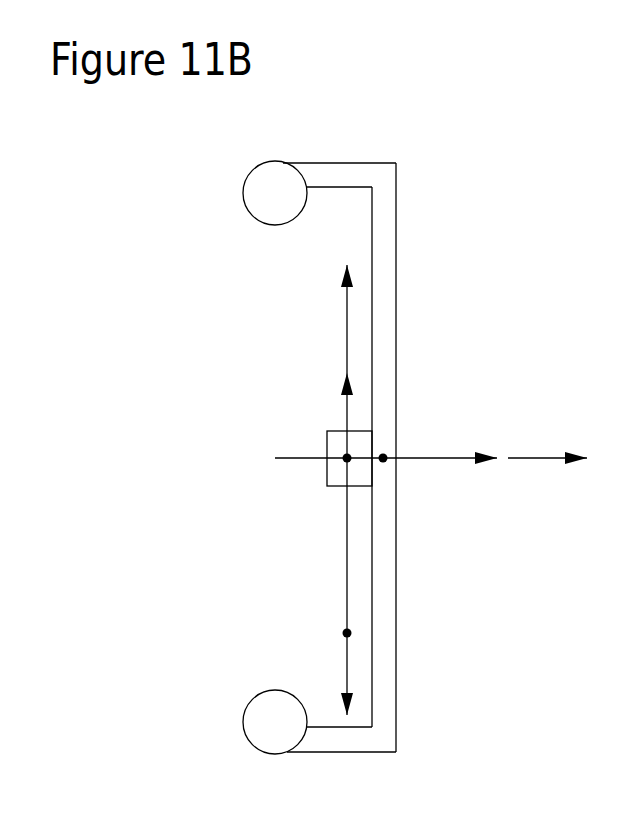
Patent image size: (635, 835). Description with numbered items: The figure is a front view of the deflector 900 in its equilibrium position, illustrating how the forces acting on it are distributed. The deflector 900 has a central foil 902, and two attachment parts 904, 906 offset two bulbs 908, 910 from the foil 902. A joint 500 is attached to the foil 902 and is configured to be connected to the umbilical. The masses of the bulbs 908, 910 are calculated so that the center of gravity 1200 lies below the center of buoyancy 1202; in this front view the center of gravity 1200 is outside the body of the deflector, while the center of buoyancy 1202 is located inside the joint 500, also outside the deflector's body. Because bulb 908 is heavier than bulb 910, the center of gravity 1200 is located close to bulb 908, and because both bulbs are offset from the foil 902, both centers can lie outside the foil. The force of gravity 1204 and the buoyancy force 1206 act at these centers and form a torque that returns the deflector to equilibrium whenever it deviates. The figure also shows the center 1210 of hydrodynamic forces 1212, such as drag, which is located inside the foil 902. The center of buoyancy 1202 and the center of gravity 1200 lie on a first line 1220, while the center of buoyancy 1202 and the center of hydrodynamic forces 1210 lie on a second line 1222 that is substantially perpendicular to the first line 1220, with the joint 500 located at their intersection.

The deflector 900 is at (357, 113).
The foil 902 is at (384, 580).
The attachment part 904 is at (352, 742).
The attachment part 906 is at (335, 163).
The bulb 908 is at (255, 723).
The bulb 910 is at (262, 162).
The joint 500 is at (327, 431).
The center of gravity 1200 is at (347, 633).
The center of buoyancy 1202 is at (345, 460).
The force of gravity 1204 is at (347, 672).
The buoyancy force 1206 is at (347, 403).
The center of hydrodynamic forces 1210 is at (387, 453).
The hydrodynamic forces 1212 is at (450, 458).
The first line 1220 is at (345, 537).
The second line 1222 is at (288, 460).